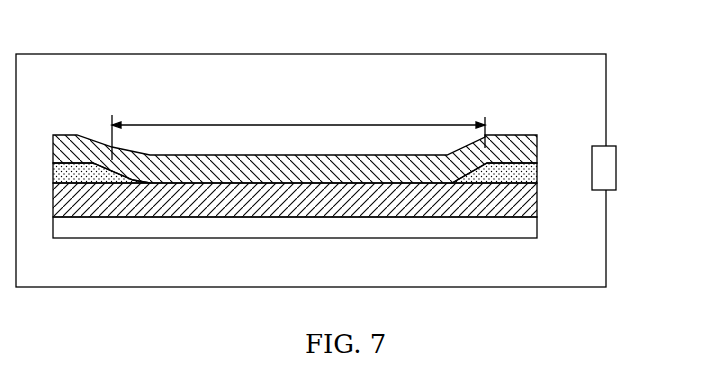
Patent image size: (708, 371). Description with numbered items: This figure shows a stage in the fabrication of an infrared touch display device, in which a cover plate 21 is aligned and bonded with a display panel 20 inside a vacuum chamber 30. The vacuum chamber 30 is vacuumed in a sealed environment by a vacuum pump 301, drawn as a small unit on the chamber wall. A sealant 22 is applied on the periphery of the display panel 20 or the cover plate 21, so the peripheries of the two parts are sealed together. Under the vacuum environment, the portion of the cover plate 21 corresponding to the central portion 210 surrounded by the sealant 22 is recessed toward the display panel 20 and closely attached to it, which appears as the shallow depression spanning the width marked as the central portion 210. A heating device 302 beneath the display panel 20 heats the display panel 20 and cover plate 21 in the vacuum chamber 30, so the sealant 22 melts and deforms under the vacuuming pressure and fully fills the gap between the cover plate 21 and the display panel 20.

The vacuum chamber 30 is at (322, 54).
The vacuum pump 301 is at (612, 169).
The cover plate 21 is at (533, 146).
The sealant 22 is at (527, 179).
The display panel 20 is at (527, 210).
The heating device 302 is at (527, 235).
The central portion 210 is at (298, 131).